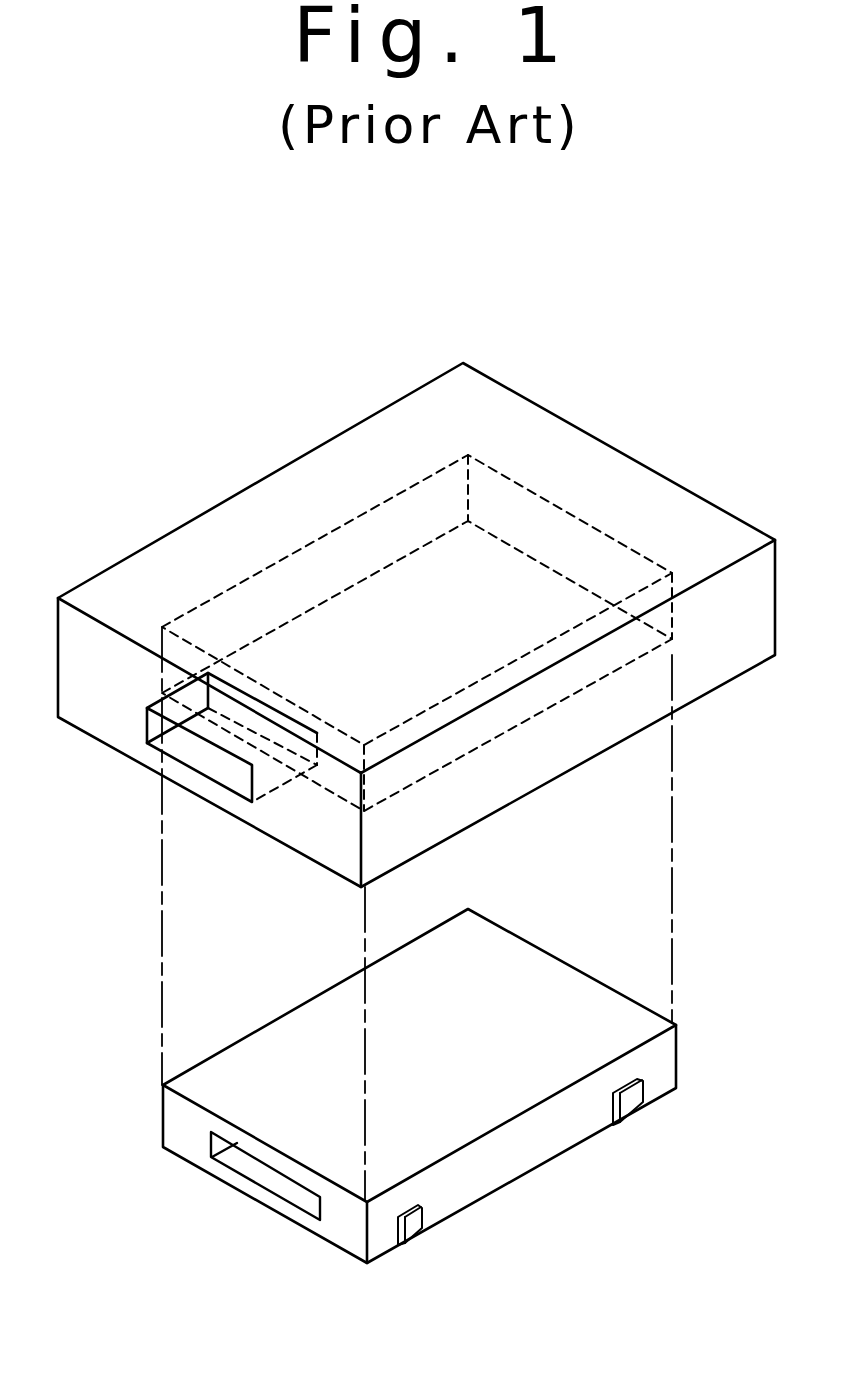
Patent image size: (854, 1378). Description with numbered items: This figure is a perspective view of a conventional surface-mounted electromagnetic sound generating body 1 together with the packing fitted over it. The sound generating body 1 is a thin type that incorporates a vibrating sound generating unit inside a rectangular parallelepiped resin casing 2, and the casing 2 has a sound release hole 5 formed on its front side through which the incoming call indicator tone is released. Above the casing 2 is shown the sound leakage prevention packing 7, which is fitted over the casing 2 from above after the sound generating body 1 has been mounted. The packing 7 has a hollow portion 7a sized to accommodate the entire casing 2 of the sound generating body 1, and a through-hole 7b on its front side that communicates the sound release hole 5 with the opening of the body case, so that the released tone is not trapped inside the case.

The surface-mounted electromagnetic sound generating body 1 is at (602, 873).
The casing 2 is at (603, 1005).
The sound release hole 5 is at (277, 1183).
The sound leakage prevention packing 7 is at (623, 473).
The hollow portion 7a is at (350, 613).
The through-hole 7b is at (207, 763).